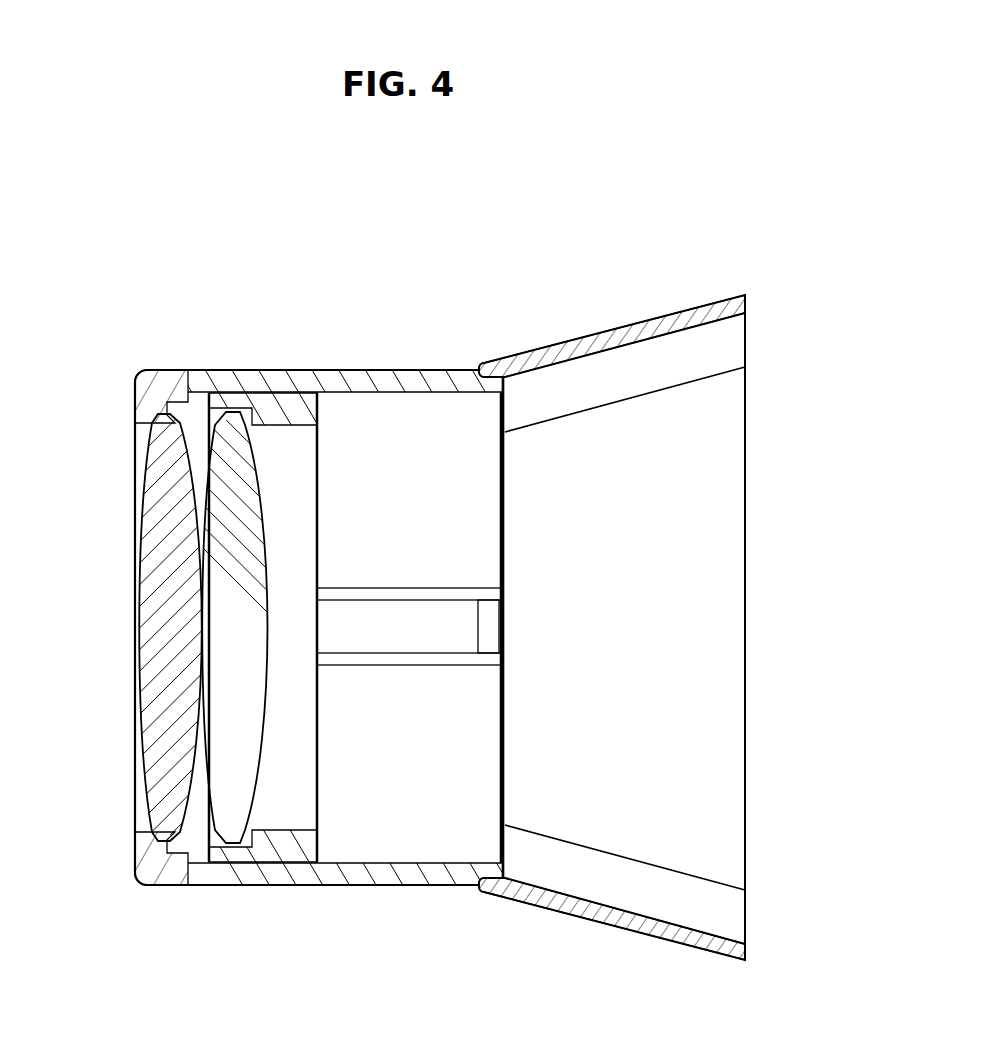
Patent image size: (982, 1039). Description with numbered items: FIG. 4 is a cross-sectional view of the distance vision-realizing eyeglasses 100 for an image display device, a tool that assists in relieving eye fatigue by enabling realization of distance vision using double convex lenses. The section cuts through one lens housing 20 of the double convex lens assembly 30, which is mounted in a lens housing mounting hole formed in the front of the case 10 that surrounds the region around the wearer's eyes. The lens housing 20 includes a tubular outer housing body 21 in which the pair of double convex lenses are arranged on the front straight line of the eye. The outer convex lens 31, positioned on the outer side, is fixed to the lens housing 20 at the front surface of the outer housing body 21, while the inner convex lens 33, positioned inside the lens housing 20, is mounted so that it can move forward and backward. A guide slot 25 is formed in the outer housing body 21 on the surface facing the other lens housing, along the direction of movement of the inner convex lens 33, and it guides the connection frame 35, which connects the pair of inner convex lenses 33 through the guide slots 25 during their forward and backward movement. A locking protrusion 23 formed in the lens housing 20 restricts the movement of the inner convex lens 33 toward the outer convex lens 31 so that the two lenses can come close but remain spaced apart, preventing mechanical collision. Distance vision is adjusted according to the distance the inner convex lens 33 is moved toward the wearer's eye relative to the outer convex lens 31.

The distance vision-realizing eyeglasses 100 is at (208, 268).
The case 10 is at (632, 322).
The lens housing 20 is at (377, 370).
The outer housing body 21 is at (358, 875).
The locking protrusion 23 is at (228, 862).
The guide slot 25 is at (380, 586).
The double convex lens assembly 30 is at (318, 468).
The outer convex lens 31 is at (170, 580).
The inner convex lens 33 is at (237, 697).
The connection frame 35 is at (318, 846).